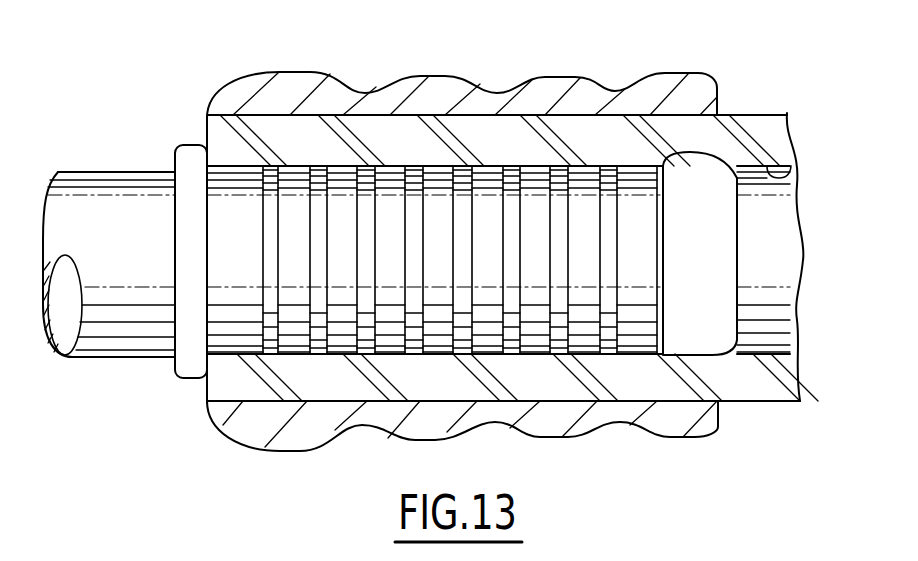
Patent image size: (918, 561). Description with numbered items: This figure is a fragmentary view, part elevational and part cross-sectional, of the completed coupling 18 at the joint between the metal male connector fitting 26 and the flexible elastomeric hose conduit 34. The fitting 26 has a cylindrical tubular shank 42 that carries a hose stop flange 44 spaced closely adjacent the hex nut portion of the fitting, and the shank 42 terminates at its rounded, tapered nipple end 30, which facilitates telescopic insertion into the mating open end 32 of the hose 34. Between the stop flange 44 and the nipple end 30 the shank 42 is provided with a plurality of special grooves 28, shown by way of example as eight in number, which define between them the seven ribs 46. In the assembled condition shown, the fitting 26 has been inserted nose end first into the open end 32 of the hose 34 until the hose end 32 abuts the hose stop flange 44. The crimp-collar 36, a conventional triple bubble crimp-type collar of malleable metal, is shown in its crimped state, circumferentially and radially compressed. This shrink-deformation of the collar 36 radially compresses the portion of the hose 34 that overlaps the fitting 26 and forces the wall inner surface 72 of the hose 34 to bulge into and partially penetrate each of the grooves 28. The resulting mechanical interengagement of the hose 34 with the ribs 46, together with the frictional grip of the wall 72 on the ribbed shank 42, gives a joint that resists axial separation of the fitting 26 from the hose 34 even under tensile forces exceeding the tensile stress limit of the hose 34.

The coupling 18 is at (117, 58).
The male connector fitting 26 is at (132, 362).
The grooves 28 is at (370, 350).
The nipple end 30 is at (724, 252).
The open end of hose 32 is at (205, 133).
The hose conduit 34 is at (789, 108).
The crimp-collar 36 is at (467, 78).
The tubular shank 42 is at (225, 214).
The hose stop flange 44 is at (190, 380).
The ribs 46 is at (345, 166).
The wall inner surface 72 is at (792, 170).